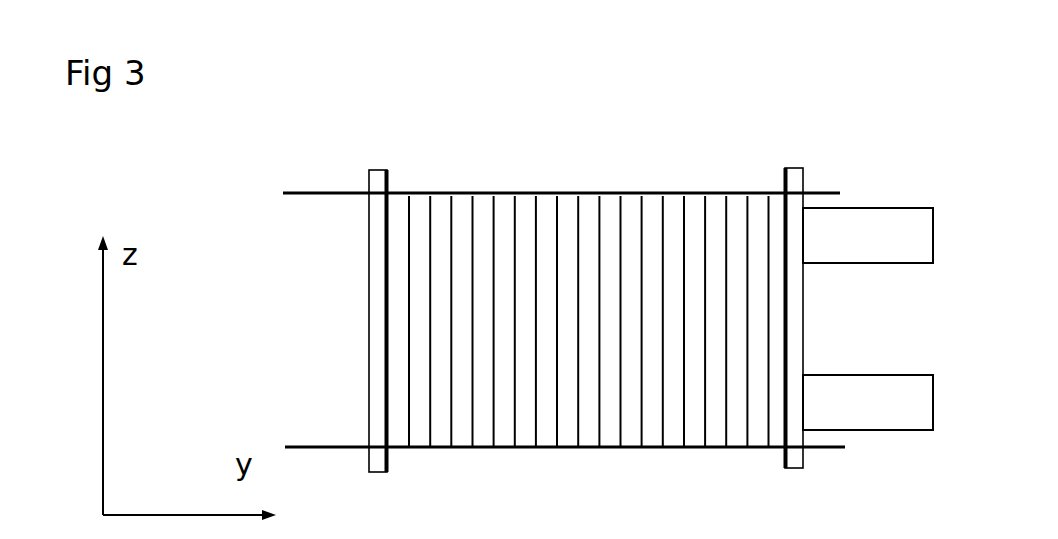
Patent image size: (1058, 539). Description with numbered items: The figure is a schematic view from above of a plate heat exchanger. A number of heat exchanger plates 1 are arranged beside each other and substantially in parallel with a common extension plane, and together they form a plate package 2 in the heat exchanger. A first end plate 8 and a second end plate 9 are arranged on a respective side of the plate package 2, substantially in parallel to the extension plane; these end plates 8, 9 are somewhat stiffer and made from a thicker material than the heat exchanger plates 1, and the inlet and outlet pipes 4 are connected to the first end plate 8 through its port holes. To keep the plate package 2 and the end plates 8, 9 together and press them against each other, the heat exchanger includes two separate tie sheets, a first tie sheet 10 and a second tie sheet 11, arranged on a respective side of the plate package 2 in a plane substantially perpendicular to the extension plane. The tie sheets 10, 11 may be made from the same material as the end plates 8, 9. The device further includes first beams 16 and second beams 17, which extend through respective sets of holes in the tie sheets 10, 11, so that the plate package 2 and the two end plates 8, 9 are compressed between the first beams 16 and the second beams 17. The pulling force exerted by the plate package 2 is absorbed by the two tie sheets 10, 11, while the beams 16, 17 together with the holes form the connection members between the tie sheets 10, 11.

The heat exchanger plate 1 is at (432, 257).
The plate package 2 is at (530, 232).
The inlet and outlet pipes 4 is at (867, 402).
The first end plate 8 is at (783, 217).
The second end plate 9 is at (384, 200).
The first tie sheet 10 is at (610, 193).
The second tie sheet 11 is at (347, 445).
The first beams 16 is at (792, 290).
The second beams 17 is at (375, 270).